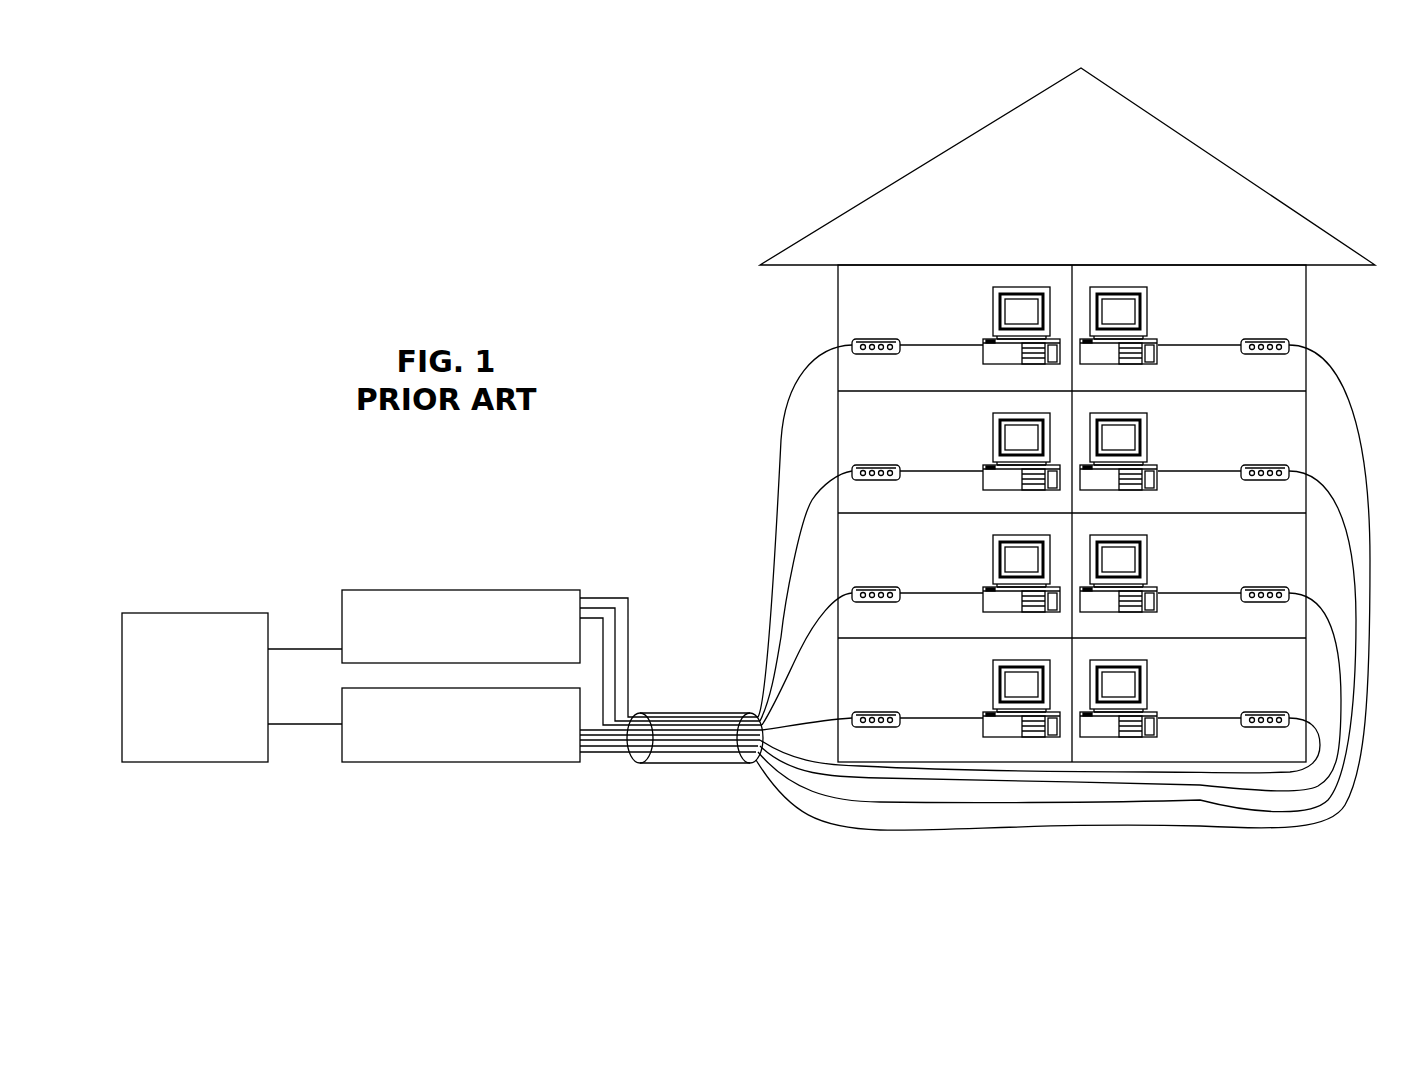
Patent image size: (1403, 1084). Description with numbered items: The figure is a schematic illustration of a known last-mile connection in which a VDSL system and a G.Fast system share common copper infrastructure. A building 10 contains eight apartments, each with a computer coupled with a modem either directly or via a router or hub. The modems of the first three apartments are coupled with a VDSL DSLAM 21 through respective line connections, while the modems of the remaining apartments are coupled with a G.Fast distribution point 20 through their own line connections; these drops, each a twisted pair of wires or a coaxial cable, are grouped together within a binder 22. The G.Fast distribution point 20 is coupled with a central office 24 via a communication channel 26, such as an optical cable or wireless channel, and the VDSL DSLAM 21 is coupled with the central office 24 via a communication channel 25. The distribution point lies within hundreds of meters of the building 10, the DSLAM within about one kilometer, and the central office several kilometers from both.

The building 10 is at (859, 204).
The G.Fast distribution point 20 is at (540, 763).
The VDSL Digital Subscriber Line Access Multiplexer (DSLAM) 21 is at (540, 590).
The binder 22 is at (698, 712).
The central office 24 is at (215, 762).
The communication channel 25 is at (291, 648).
The communication channel 26 is at (310, 723).